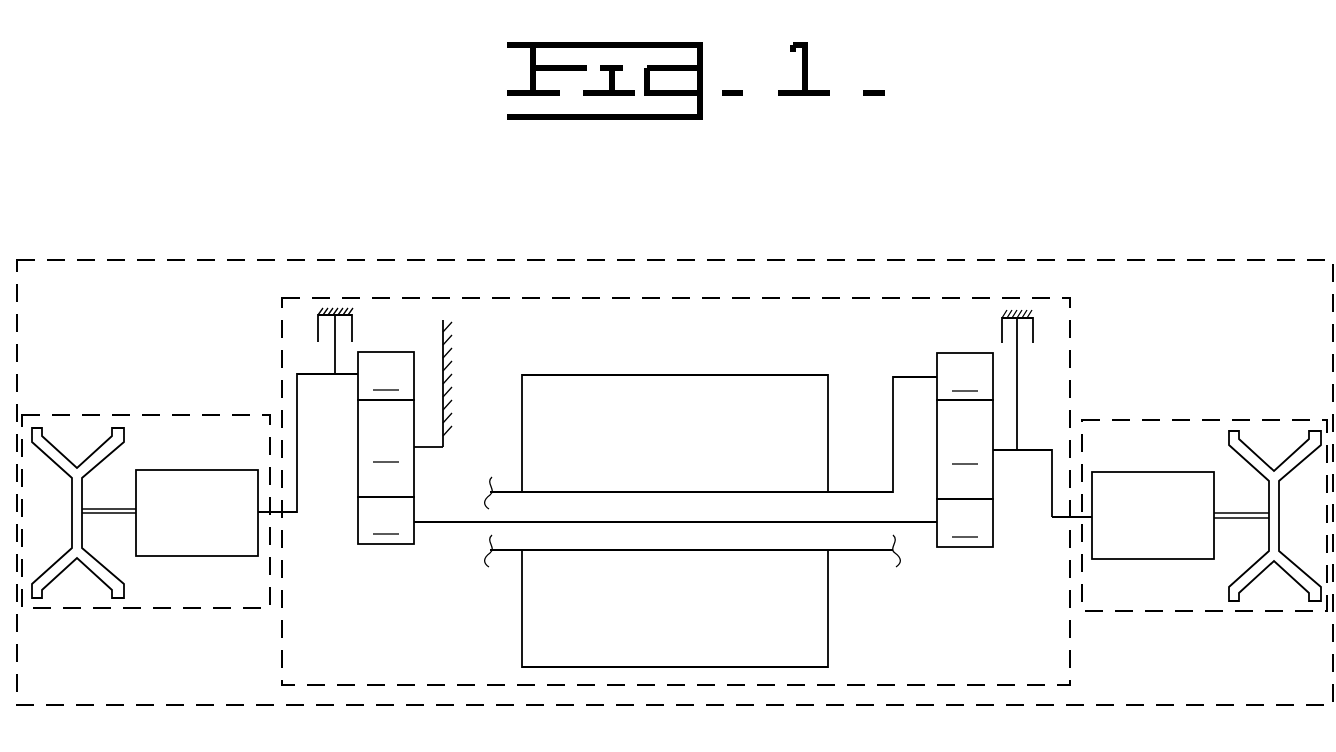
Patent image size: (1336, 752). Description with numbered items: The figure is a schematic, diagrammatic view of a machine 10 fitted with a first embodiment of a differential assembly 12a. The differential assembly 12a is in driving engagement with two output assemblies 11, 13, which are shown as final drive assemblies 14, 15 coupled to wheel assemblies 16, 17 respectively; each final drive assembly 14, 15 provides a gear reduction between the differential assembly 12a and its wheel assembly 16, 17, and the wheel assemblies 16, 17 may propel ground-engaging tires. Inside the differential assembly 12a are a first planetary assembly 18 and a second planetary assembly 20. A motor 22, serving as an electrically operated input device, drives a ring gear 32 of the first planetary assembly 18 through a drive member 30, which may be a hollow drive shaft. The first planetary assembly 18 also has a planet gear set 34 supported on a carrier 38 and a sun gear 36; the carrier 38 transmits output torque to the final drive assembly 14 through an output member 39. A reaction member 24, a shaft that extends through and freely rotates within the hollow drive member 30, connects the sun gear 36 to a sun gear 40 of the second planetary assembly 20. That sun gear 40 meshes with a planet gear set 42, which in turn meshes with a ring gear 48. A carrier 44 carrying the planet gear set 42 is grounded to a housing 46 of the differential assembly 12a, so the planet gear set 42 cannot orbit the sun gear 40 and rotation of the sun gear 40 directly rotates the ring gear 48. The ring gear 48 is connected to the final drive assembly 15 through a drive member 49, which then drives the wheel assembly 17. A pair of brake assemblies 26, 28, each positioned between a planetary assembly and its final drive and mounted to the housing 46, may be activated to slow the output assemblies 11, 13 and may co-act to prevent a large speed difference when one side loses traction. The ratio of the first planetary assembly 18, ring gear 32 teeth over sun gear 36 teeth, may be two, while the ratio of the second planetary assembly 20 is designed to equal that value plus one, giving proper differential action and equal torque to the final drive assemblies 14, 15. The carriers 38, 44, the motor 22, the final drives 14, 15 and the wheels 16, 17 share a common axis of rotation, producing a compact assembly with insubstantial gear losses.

The machine 10 is at (908, 258).
The output assembly 11 is at (1158, 418).
The differential assembly 12a is at (632, 296).
The output assembly 13 is at (220, 415).
The final drive assembly 14 is at (1140, 561).
The final drive assembly 15 is at (181, 556).
The wheel assembly 16 is at (1303, 447).
The wheel assembly 17 is at (96, 445).
The first planetary assembly 18 is at (923, 456).
The second planetary assembly 20 is at (356, 477).
The motor 22 is at (610, 375).
The reaction member 24 is at (920, 525).
The brake assembly 26 is at (1048, 317).
The brake assembly 28 is at (314, 318).
The drive member 30 is at (877, 492).
The ring gear 32 is at (965, 376).
The planet gear set 34 is at (965, 449).
The sun gear 36 is at (965, 523).
The carrier 38 is at (995, 452).
The output member 39 is at (1060, 475).
The sun gear 40 is at (352, 532).
The planet gear set 42 is at (386, 448).
The carrier 44 is at (417, 448).
The housing 46 is at (353, 313).
The ring gear 48 is at (386, 376).
The drive member 49 is at (299, 445).